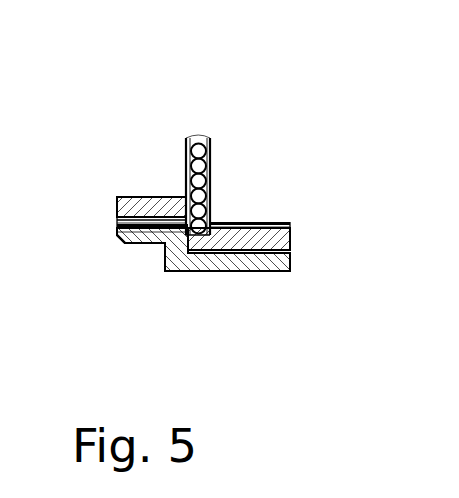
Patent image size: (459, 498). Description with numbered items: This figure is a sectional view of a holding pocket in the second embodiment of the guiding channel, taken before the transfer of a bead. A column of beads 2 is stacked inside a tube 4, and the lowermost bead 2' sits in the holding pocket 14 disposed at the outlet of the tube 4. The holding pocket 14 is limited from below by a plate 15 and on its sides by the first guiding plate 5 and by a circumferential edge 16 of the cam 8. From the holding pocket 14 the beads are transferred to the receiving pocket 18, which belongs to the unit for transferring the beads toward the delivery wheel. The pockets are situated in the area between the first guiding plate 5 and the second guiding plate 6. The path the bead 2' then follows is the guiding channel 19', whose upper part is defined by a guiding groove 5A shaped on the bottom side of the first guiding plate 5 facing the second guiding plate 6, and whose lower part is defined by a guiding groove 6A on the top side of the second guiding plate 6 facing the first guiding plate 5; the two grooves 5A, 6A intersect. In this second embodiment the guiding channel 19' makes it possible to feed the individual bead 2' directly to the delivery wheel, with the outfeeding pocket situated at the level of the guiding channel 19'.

The beads 2 is at (225, 130).
The lowermost bead 2' is at (244, 170).
The tube 4 is at (187, 138).
The first guiding plate 5 is at (171, 202).
The guiding groove 5A is at (143, 222).
The second guiding plate 6 is at (125, 243).
The guiding groove 6A is at (140, 242).
The cam 8 is at (290, 229).
The holding pocket 14 is at (218, 252).
The plate 15 is at (289, 238).
The circumferential edge 16 is at (217, 223).
The receiving pocket 18 is at (189, 236).
The guiding channel 19' is at (198, 302).